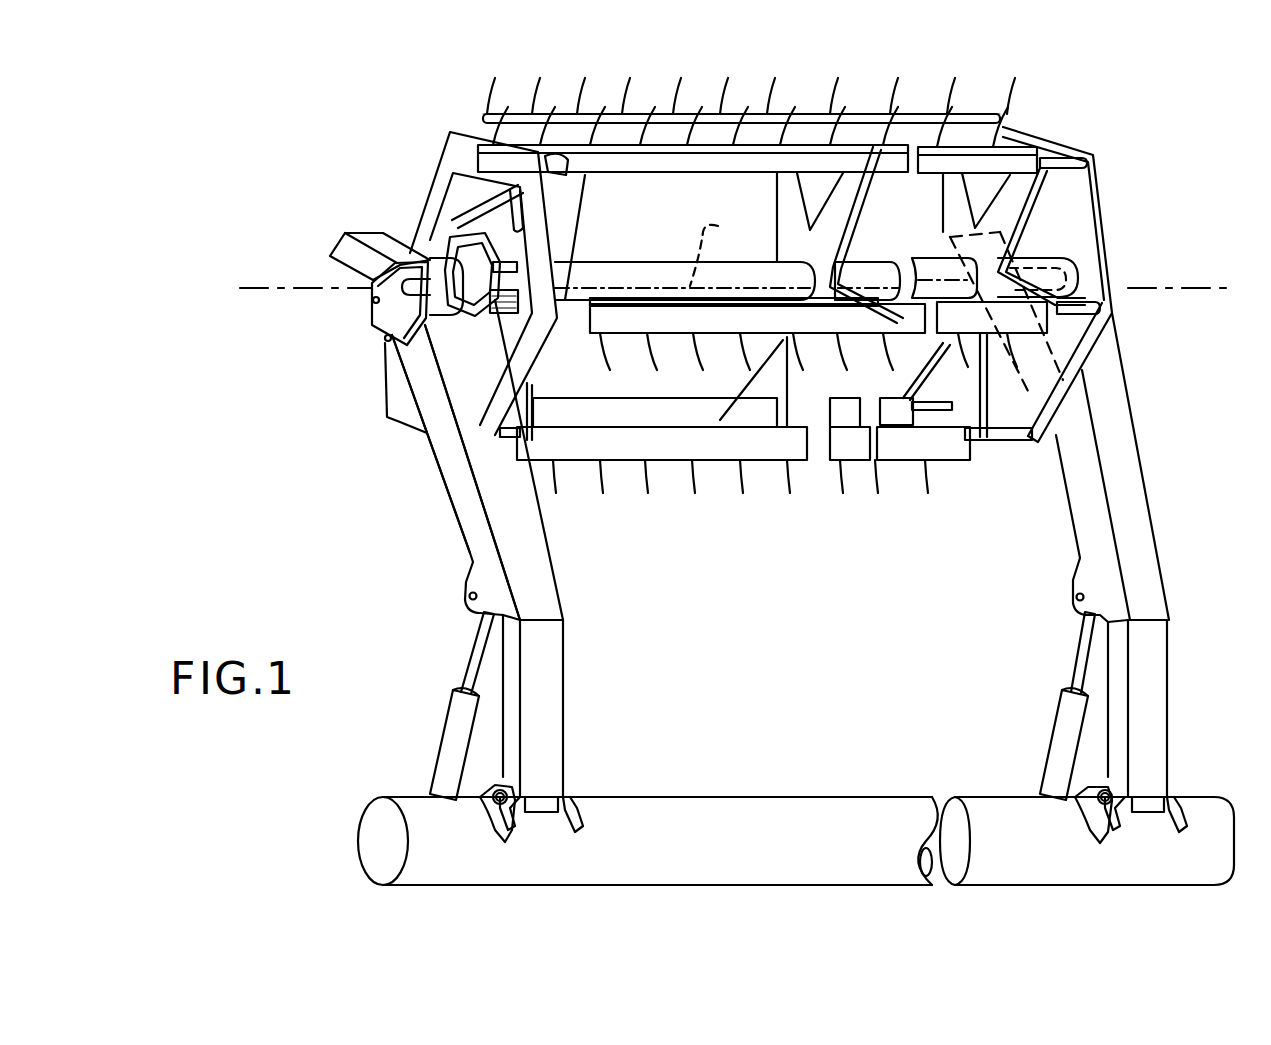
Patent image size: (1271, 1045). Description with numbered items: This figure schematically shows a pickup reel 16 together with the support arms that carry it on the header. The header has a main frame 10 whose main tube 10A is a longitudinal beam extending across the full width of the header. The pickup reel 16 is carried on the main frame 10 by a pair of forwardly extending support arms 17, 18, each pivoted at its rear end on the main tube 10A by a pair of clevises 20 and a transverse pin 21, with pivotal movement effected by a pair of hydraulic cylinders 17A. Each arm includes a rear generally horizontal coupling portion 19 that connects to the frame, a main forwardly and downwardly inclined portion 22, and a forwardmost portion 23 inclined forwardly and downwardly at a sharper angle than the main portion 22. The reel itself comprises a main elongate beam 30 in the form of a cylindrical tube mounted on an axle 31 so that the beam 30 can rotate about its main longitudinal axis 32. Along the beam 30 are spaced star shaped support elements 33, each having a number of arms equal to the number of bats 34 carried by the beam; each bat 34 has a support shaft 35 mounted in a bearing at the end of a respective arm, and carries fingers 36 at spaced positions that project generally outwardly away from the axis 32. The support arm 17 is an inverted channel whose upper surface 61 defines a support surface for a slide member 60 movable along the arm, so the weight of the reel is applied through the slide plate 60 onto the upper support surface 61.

The main frame 10 is at (362, 793).
The main tube 10A is at (735, 797).
The pickup reel 16 is at (988, 88).
The support arm 17 is at (462, 513).
The hydraulic cylinder 17A is at (445, 715).
The support arm 18 is at (1120, 487).
The rear coupling portion 19 is at (540, 715).
The clevis 20 is at (590, 810).
The transverse pin 21 is at (494, 799).
The main inclined portion 22 is at (452, 468).
The forwardmost portion 23 is at (358, 232).
The main elongate beam 30 is at (664, 258).
The axle 31 is at (397, 292).
The main longitudinal axis 32 is at (722, 249).
The star shaped support element 33 is at (565, 183).
The bat 34 is at (553, 107).
The support shaft 35 is at (543, 155).
The finger 36 is at (683, 88).
The slide member 60 is at (380, 325).
The upper surface 61 is at (505, 532).